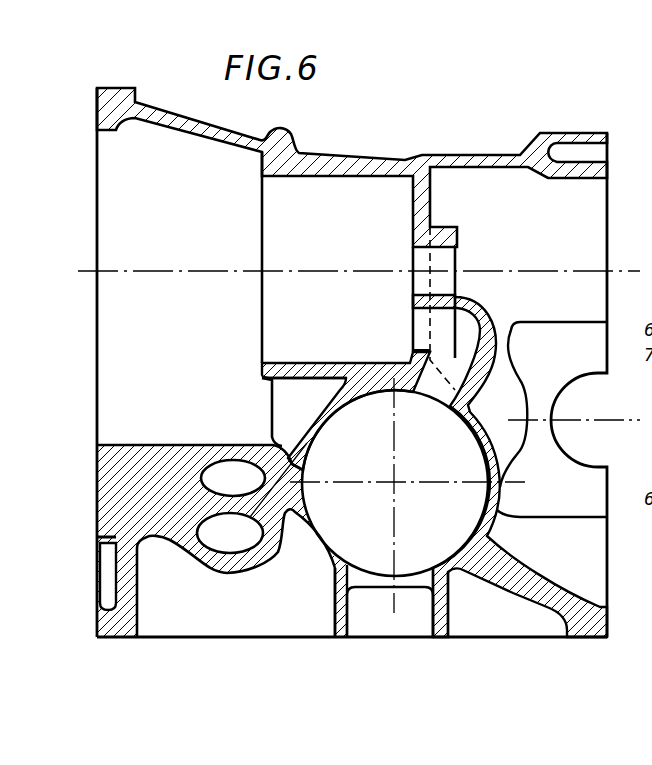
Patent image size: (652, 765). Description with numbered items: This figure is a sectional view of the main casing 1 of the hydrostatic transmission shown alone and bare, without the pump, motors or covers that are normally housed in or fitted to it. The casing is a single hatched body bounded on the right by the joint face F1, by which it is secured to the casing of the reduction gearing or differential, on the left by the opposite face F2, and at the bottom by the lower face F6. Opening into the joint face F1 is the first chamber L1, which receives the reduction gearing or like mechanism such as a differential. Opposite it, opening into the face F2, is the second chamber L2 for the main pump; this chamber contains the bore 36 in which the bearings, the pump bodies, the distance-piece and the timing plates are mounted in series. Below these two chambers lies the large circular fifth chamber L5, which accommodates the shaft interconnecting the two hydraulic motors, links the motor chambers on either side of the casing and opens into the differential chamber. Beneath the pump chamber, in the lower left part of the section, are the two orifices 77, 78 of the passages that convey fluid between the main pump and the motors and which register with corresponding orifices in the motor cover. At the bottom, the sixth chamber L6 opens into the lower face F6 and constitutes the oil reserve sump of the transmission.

The main casing 1 is at (366, 158).
The bore 36 is at (323, 364).
The orifice 77 is at (225, 478).
The orifice 78 is at (222, 535).
The first chamber L1 is at (542, 236).
The second chamber L2 is at (188, 205).
The fifth chamber L5 is at (450, 470).
The sixth chamber L6 is at (260, 605).
The joint face F1 is at (607, 263).
The face F2 is at (96, 257).
The lower face F6 is at (178, 637).